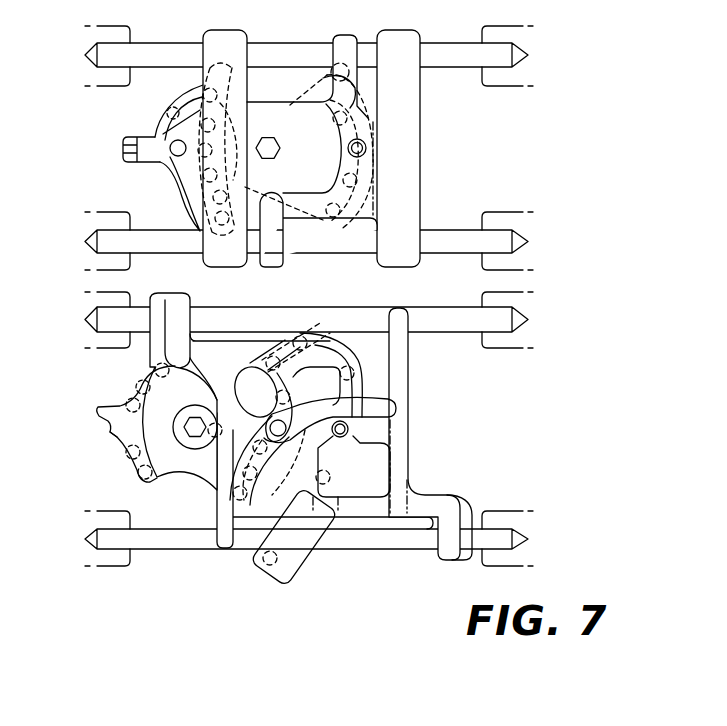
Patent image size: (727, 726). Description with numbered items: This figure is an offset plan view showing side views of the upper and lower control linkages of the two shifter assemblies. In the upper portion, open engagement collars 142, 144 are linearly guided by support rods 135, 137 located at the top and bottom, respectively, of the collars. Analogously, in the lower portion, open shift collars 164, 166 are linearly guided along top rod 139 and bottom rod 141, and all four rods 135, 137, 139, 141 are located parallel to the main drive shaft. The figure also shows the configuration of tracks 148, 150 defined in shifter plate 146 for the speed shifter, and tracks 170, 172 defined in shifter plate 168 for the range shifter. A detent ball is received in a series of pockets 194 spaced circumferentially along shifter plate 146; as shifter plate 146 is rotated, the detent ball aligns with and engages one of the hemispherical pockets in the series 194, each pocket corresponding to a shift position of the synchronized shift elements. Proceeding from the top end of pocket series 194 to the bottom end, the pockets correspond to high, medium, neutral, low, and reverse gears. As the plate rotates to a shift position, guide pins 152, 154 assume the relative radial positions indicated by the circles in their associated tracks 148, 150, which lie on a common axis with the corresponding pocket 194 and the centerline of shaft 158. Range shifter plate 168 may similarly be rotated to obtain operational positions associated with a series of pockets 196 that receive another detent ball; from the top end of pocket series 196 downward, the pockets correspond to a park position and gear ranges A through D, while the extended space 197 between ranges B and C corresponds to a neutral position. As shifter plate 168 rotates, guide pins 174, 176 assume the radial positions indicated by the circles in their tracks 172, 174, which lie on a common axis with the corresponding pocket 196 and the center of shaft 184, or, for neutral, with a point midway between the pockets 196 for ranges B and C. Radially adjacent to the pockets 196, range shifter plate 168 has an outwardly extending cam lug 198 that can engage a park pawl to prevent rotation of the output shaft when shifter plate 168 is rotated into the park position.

The support rod 135 is at (424, 43).
The support rod 137 is at (425, 230).
The top rod 139 is at (473, 308).
The bottom rod 141 is at (427, 550).
The open engagement collar 142 is at (226, 30).
The open engagement collar 144 is at (421, 114).
The shifter plate 146 is at (310, 125).
The track 148 is at (183, 197).
The track 150 is at (305, 232).
The guide pin 152 is at (171, 155).
The guide pin 154 is at (366, 148).
The shaft 158 is at (270, 137).
The open shift collar 164 is at (225, 549).
The open shift collar 166 is at (409, 371).
The range shifter plate 168 is at (273, 473).
The track 170 is at (392, 400).
The track 172 is at (340, 347).
The guide pin 174 is at (290, 431).
The guide pin 176 is at (349, 429).
The shaft 184 is at (200, 472).
The series of pockets 194 is at (243, 187).
The series of pockets 196 is at (137, 370).
The extended space 197 is at (117, 434).
The cam lug 198 is at (100, 420).